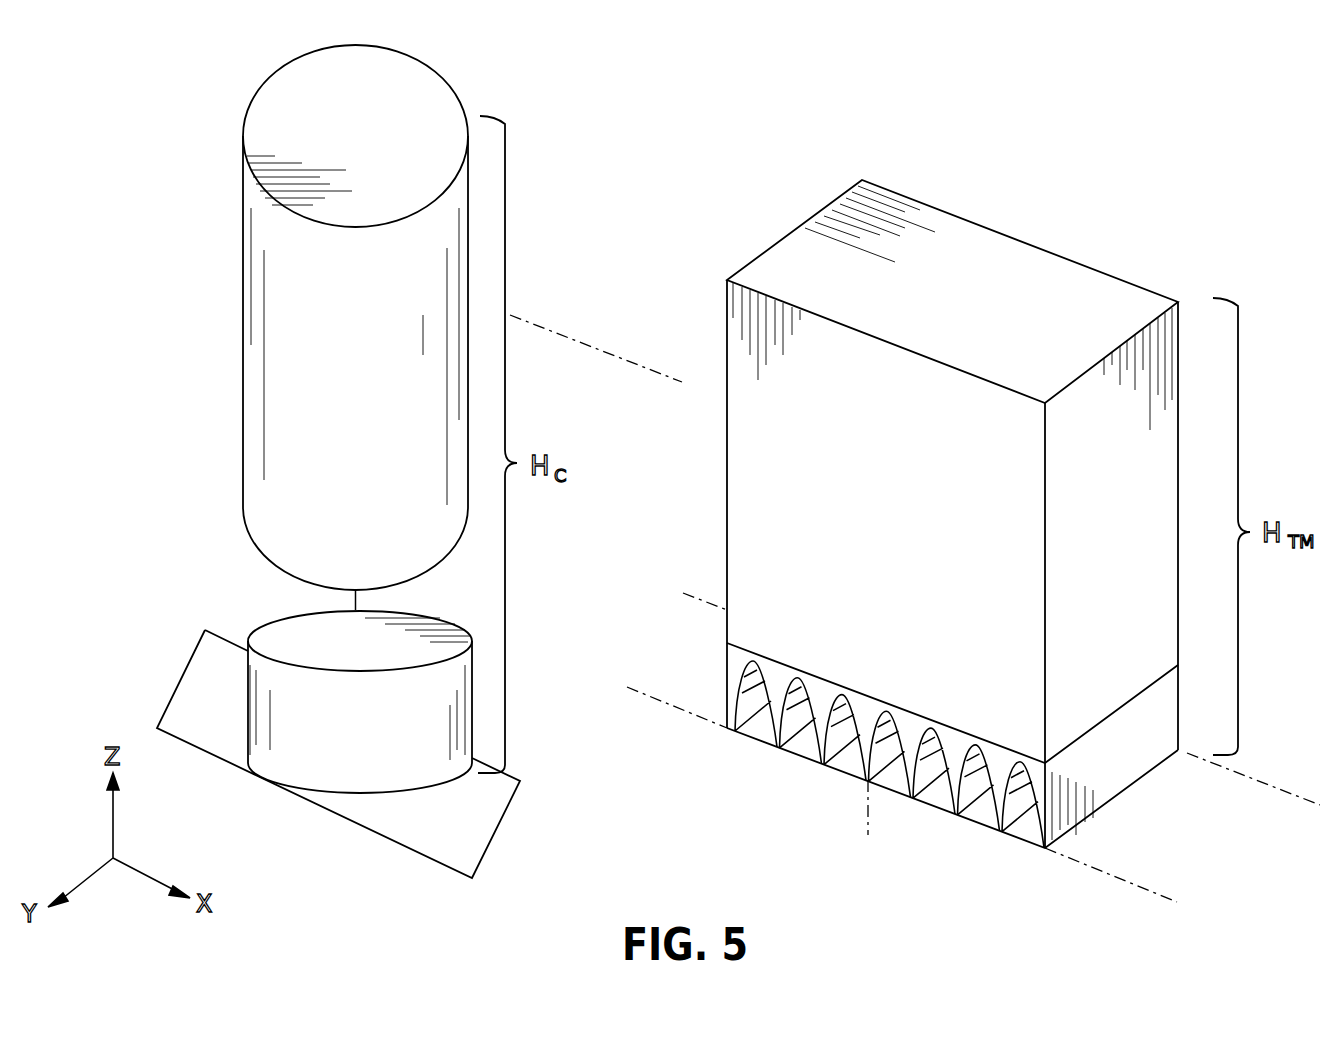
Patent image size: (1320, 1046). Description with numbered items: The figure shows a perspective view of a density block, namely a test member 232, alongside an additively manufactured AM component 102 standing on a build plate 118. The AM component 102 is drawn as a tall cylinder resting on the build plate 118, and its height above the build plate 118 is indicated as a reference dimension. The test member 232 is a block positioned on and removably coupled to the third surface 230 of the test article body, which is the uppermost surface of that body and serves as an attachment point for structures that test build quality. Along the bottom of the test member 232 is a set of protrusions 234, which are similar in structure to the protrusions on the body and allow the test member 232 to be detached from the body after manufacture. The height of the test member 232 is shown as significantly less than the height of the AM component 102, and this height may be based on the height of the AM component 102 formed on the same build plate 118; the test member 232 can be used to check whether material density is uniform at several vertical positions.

The AM component 102 is at (272, 333).
The build plate 118 is at (205, 682).
The third surface 230 is at (703, 675).
The test member 232 is at (738, 487).
The set of protrusions 234 is at (730, 710).